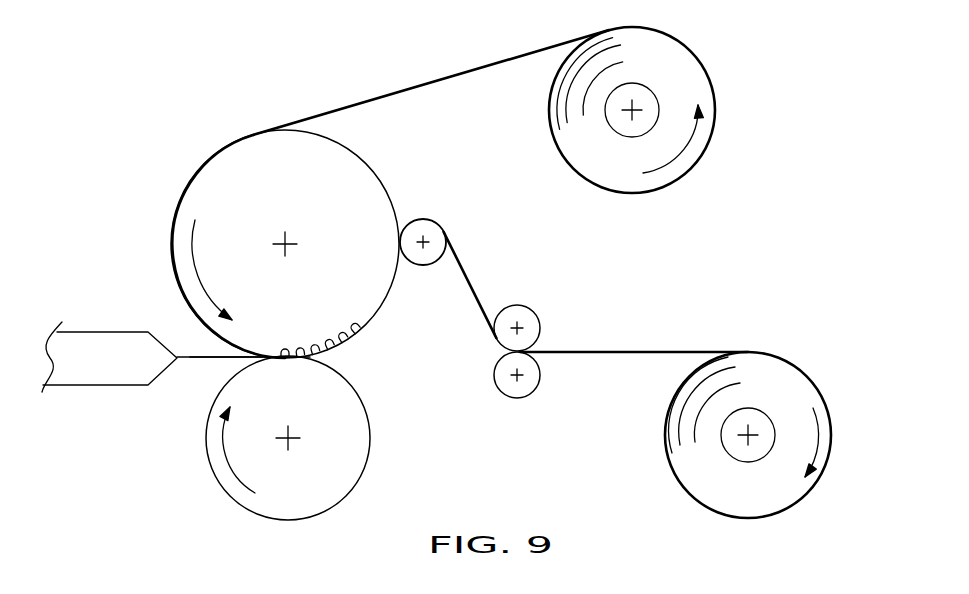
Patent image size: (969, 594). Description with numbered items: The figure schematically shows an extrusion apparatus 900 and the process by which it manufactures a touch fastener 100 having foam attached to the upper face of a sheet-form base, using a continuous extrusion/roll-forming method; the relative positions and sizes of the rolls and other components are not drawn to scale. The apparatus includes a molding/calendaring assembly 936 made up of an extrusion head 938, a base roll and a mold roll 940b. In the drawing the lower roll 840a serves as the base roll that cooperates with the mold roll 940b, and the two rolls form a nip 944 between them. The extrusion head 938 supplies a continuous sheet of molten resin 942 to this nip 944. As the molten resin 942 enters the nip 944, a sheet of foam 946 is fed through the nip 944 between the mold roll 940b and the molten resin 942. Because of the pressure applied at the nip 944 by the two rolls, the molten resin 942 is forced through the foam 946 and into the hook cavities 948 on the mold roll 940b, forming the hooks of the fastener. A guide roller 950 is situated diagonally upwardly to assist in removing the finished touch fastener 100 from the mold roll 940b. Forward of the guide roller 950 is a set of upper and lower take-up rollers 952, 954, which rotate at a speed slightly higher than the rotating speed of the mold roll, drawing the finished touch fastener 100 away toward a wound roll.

The extrusion apparatus 900 is at (122, 263).
The molding/calendaring assembly 936 is at (210, 138).
The extrusion head 938 is at (128, 371).
The mold roll 940b is at (343, 209).
The molten resin 942 is at (215, 357).
The nip 944 is at (335, 357).
The sheet of foam 946 is at (455, 75).
The hook cavities 948 is at (357, 325).
The guide roller 950 is at (423, 265).
The upper take-up roller 952 is at (518, 398).
The lower take-up roller 954 is at (518, 305).
The backing roller 840a is at (334, 485).
The touch fastener 100 is at (664, 345).